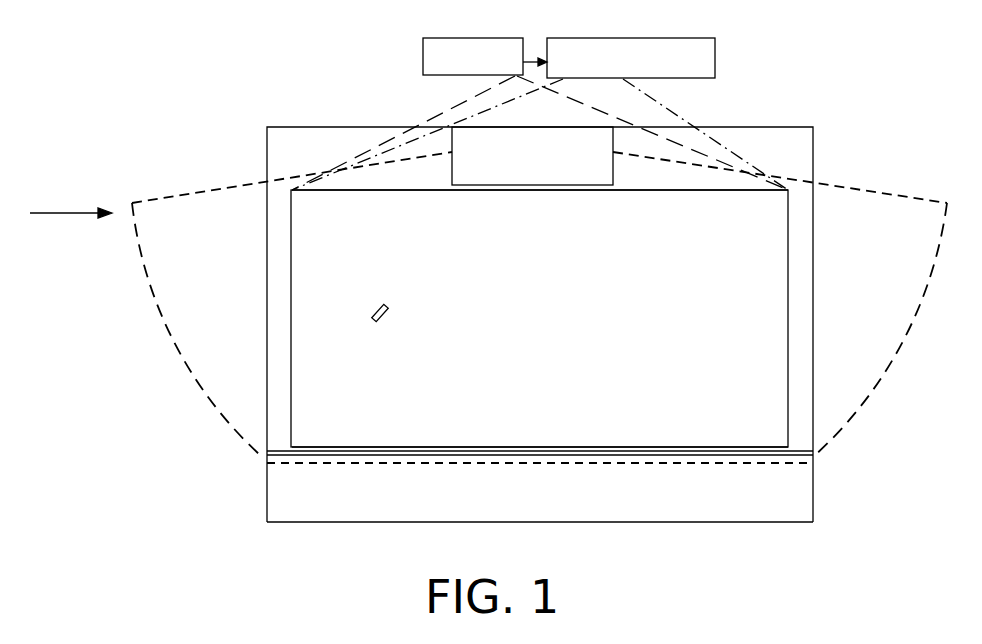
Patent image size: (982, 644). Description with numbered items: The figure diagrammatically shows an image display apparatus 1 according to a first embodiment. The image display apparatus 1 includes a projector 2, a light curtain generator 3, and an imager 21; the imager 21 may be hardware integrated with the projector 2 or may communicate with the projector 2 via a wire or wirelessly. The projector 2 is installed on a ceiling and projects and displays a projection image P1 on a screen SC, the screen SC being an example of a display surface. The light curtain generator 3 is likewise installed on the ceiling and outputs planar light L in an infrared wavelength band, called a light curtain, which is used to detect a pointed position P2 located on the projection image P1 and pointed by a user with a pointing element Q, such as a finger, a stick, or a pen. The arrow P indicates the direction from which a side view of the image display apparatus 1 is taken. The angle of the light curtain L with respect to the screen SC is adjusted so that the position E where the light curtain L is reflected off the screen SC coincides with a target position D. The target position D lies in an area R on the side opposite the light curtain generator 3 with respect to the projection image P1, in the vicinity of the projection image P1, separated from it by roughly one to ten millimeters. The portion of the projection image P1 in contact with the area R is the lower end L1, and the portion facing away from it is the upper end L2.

The image display apparatus 1 is at (226, 66).
The projector 2 is at (715, 61).
The imager 21 is at (422, 53).
The light curtain generator 3 is at (452, 168).
The screen SC is at (743, 127).
The light curtain L is at (220, 200).
The lower end L1 is at (653, 445).
The upper end L2 is at (668, 191).
The arrow P is at (69, 212).
The projection image P1 is at (788, 255).
The pointed position P2 is at (388, 307).
The pointing element Q is at (378, 318).
The target position D is at (770, 452).
The area R is at (776, 478).
The position where the light curtain is reflected E is at (297, 468).